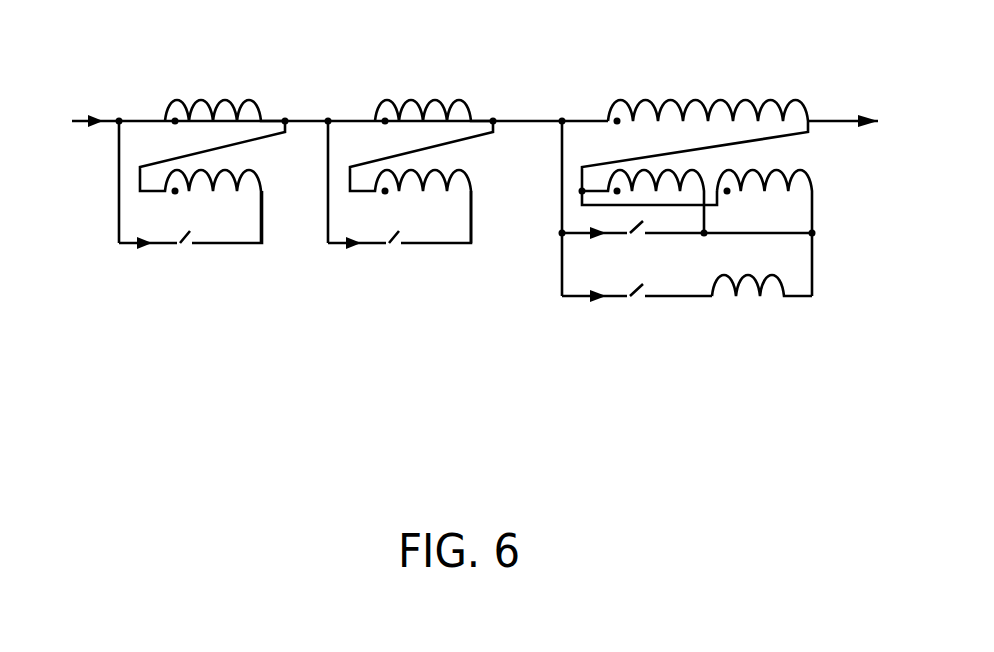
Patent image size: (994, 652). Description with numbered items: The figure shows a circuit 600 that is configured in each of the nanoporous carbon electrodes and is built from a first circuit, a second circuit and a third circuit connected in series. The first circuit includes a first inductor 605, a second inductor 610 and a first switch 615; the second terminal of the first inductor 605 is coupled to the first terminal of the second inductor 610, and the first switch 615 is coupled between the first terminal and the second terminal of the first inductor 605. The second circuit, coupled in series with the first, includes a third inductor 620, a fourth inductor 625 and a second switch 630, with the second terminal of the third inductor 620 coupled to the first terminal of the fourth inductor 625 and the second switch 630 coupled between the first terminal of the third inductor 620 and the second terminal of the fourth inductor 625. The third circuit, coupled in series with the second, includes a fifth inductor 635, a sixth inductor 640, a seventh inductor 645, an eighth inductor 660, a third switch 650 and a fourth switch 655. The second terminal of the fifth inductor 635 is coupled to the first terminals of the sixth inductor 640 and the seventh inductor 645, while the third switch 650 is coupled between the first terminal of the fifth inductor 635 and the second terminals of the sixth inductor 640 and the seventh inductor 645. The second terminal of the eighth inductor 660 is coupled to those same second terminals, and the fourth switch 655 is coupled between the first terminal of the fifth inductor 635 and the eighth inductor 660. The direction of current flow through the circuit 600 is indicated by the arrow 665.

The circuit 600 is at (612, 410).
The first inductor 605 is at (221, 99).
The second inductor 610 is at (252, 170).
The first switch 615 is at (184, 244).
The third inductor 620 is at (430, 99).
The fourth inductor 625 is at (461, 173).
The second switch 630 is at (393, 244).
The fifth inductor 635 is at (711, 99).
The sixth inductor 640 is at (704, 169).
The seventh inductor 645 is at (815, 175).
The third switch 650 is at (638, 226).
The fourth switch 655 is at (638, 289).
The eighth inductor 660 is at (757, 274).
The arrow 665 is at (95, 115).